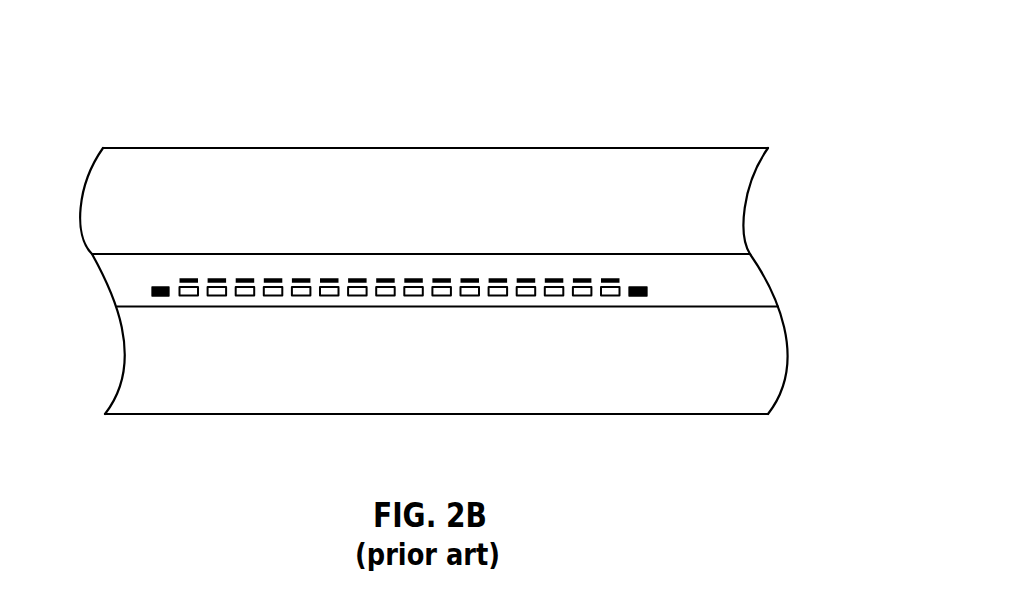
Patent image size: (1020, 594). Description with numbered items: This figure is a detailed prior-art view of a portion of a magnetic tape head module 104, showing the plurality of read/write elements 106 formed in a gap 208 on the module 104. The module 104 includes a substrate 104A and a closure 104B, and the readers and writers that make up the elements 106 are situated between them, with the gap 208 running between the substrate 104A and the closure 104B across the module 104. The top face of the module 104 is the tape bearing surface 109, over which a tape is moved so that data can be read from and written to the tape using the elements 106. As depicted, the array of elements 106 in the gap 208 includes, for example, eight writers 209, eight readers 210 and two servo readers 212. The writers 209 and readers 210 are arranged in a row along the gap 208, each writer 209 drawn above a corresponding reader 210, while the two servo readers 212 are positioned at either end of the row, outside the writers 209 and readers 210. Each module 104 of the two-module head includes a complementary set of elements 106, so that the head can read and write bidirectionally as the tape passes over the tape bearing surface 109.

The module 104 is at (112, 96).
The substrate 104A is at (215, 148).
The closure 104B is at (272, 415).
The tape bearing surface 109 is at (356, 218).
The read/write elements 106 is at (676, 275).
The gap 208 is at (772, 278).
The writers 209 is at (527, 278).
The readers 210 is at (526, 296).
The servo readers 212 is at (151, 290).